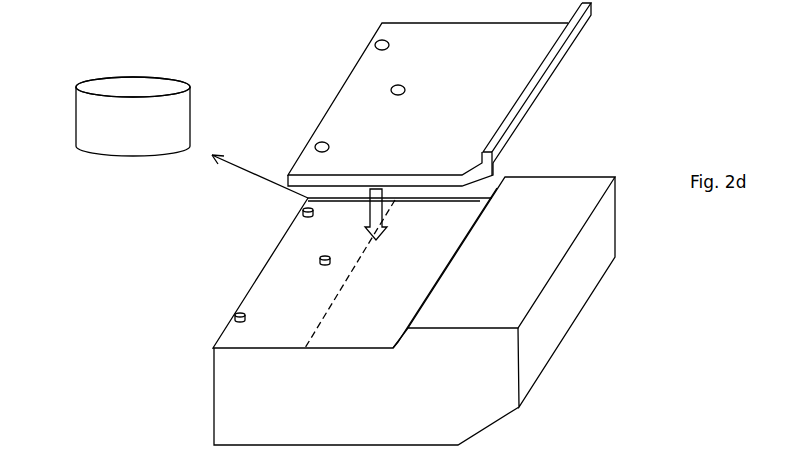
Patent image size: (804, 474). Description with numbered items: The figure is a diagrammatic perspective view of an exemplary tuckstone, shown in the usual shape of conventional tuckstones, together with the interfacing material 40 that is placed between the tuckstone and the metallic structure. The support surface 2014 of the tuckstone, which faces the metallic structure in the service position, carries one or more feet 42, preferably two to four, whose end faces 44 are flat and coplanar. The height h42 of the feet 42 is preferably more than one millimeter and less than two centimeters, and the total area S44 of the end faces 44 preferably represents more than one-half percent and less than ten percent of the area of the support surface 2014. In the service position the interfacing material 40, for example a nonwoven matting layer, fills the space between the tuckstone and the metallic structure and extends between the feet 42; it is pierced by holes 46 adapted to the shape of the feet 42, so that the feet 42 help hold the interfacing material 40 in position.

The feet 42 is at (87, 70).
The end faces 44 is at (155, 85).
The area of the end faces S44 is at (125, 86).
The height of the feet h42 is at (60, 88).
The interfacing material 40 is at (357, 95).
The holes 46 is at (382, 44).
The support surface 2014 is at (278, 272).